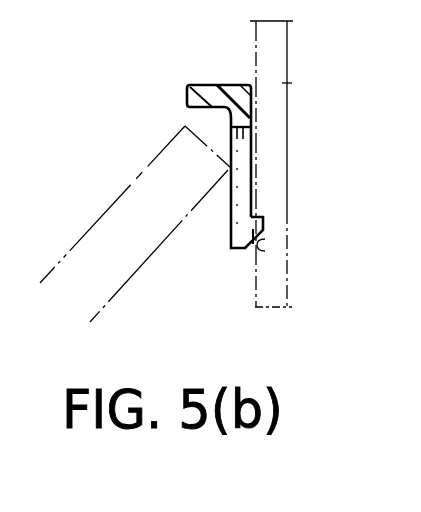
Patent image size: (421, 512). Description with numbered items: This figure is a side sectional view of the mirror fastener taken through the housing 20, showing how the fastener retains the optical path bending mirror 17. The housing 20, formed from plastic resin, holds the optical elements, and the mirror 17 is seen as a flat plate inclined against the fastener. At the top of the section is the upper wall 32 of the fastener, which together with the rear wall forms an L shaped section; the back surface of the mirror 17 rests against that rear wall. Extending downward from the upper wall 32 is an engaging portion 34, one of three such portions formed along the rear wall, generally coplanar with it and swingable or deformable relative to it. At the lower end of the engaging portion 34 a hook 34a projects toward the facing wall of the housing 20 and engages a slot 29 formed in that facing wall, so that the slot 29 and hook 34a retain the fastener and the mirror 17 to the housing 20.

The optical path bending mirror 17 is at (88, 232).
The housing 20 is at (317, 87).
The upper wall 32 is at (210, 84).
The engaging portion 34 is at (238, 206).
The hook 34a is at (242, 234).
The slot 29 is at (266, 255).